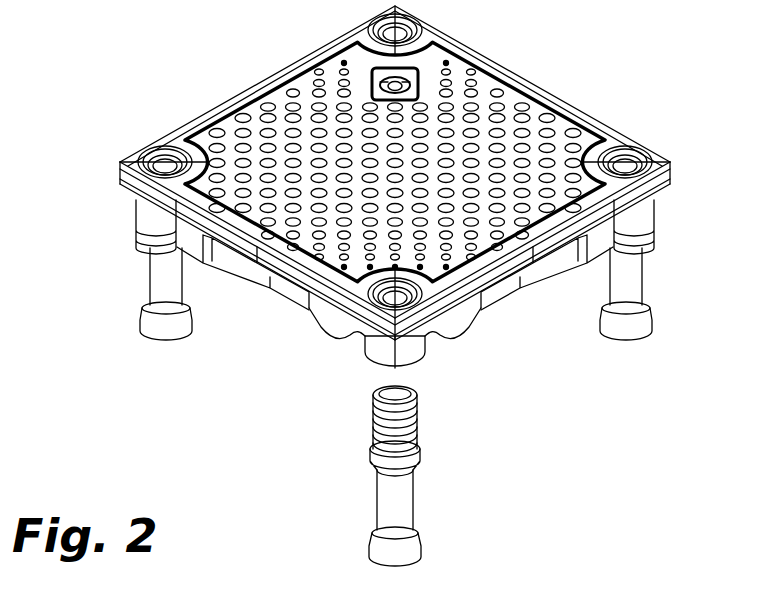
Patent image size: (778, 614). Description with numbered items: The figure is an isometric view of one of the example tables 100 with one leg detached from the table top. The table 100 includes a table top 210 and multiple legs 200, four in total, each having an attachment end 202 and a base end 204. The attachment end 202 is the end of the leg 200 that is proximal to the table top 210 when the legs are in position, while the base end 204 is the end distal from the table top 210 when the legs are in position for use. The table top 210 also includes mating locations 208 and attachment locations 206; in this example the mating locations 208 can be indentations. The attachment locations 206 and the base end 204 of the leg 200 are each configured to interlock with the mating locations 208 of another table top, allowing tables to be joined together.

The table 100 is at (647, 533).
The leg 200 is at (443, 495).
The attachment end 202 is at (360, 428).
The base end 204 is at (354, 544).
The attachment location 206 is at (417, 372).
The mating location 208 is at (363, 277).
The table top 210 is at (562, 90).